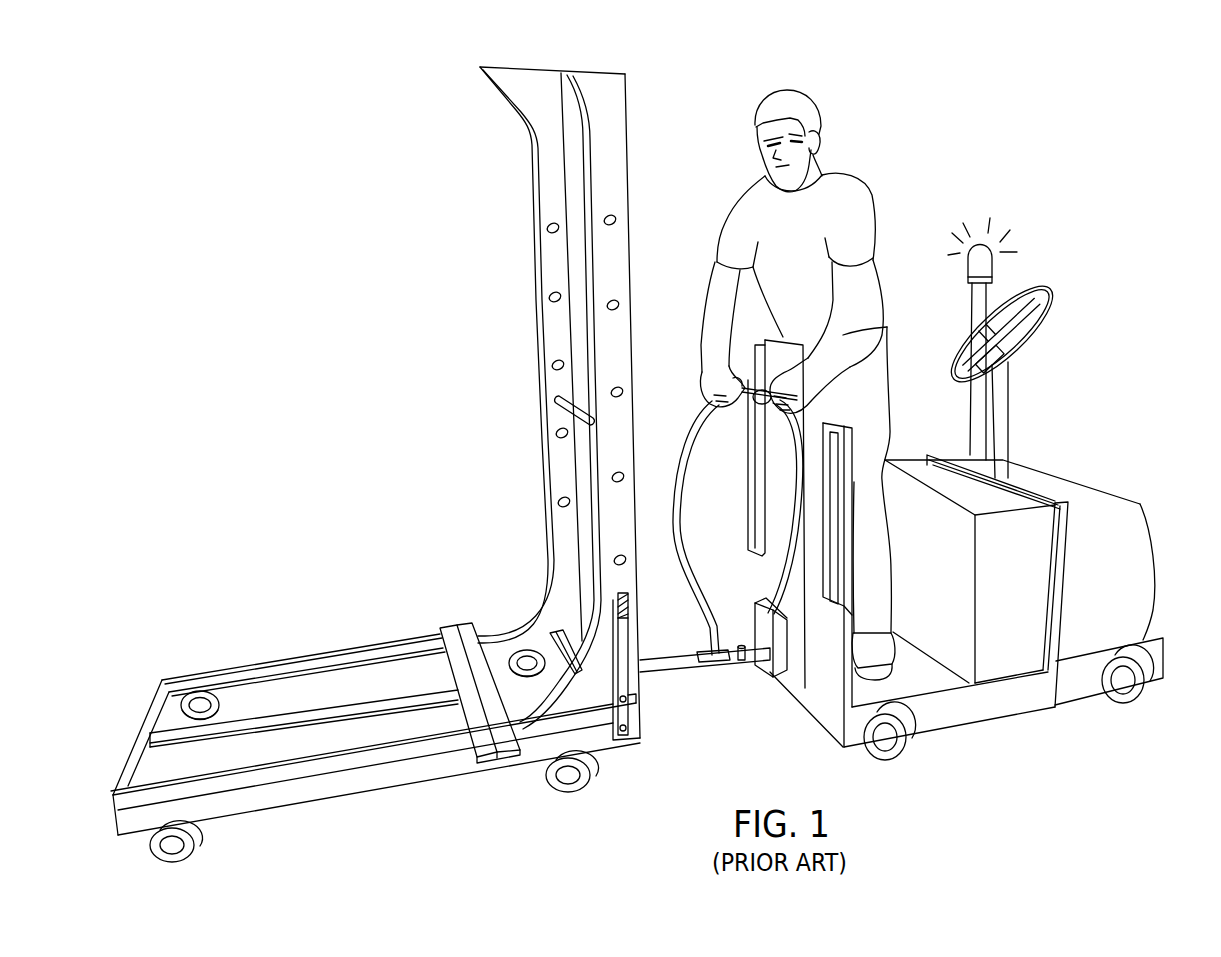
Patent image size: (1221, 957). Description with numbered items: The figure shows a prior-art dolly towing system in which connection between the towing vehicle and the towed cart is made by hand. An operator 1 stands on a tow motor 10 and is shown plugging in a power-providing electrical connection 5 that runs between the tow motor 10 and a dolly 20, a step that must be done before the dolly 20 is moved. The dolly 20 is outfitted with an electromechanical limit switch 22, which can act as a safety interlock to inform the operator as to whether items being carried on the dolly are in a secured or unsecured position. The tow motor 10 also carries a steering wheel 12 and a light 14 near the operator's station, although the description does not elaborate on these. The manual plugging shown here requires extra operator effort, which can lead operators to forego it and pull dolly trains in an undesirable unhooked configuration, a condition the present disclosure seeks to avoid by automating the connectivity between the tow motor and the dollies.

The operator 1 is at (881, 149).
The power-providing electrical connection 5 is at (740, 433).
The tow motor 10 is at (1133, 550).
The steering wheel 12 is at (1052, 298).
The warning light 14 is at (993, 278).
The dolly 20 is at (550, 263).
The electromechanical limit switch 22 is at (638, 705).